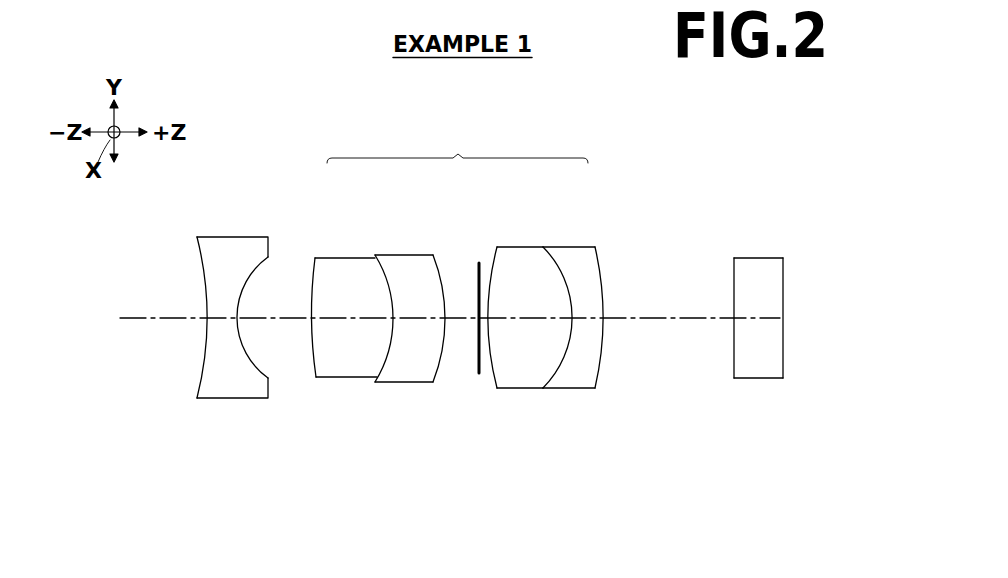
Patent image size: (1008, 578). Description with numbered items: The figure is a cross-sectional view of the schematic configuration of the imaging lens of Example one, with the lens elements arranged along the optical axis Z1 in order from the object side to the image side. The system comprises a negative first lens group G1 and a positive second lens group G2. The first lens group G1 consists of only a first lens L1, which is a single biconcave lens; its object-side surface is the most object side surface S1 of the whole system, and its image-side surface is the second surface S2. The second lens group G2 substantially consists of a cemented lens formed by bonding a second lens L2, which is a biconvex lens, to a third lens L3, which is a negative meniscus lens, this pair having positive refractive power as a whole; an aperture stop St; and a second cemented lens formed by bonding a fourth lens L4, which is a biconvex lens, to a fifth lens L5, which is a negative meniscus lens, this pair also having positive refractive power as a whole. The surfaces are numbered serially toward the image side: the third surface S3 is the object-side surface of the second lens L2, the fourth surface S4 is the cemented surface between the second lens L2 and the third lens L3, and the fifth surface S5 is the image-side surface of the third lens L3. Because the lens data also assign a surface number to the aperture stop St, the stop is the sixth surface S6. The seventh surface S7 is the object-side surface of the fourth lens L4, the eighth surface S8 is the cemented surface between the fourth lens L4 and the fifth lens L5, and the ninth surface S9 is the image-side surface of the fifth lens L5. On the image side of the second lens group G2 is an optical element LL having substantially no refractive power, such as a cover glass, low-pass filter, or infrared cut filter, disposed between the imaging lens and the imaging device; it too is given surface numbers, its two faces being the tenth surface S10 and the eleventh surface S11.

The optical axis Z1 is at (136, 318).
The first lens group G1 is at (243, 185).
The second lens group G2 is at (466, 301).
The first lens L1 is at (245, 237).
The second lens L2 is at (347, 257).
The third lens L3 is at (407, 255).
The fourth lens L4 is at (518, 247).
The fifth lens L5 is at (575, 247).
The aperture stop St is at (470, 262).
The optical element LL is at (757, 258).
The first surface S1 is at (197, 390).
The second surface S2 is at (268, 378).
The third surface S3 is at (316, 376).
The fourth surface S4 is at (388, 378).
The fifth surface S5 is at (443, 376).
The sixth surface S6 is at (479, 375).
The seventh surface S7 is at (492, 378).
The eighth surface S8 is at (552, 378).
The ninth surface S9 is at (597, 376).
The tenth surface S10 is at (734, 378).
The eleventh surface S11 is at (784, 378).